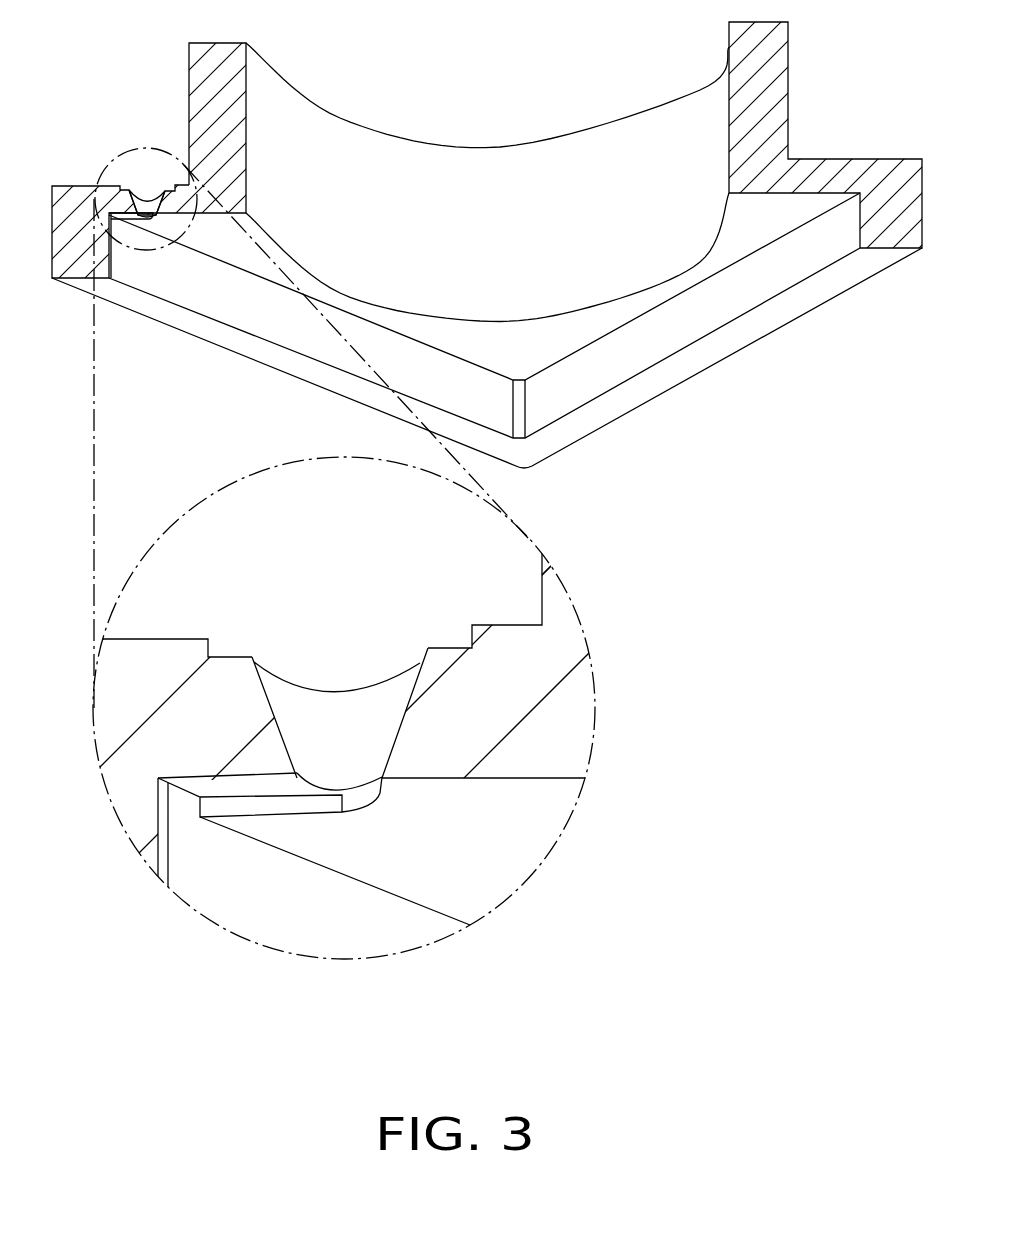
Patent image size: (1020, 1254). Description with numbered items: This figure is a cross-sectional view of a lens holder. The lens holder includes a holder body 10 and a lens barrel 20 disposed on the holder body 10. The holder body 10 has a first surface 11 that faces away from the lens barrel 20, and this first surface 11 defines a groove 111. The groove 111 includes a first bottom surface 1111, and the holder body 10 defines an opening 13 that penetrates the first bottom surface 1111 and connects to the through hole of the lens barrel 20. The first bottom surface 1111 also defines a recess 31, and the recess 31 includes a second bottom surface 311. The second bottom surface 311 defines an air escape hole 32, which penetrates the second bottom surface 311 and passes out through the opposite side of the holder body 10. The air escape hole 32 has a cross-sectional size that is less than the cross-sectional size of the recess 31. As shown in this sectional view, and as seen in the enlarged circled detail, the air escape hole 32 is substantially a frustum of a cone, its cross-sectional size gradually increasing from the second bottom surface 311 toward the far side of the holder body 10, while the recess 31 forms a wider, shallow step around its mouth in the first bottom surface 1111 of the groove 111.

The holder body 10 is at (83, 213).
The first surface 11 is at (845, 280).
The opening 13 is at (485, 180).
The lens barrel 20 is at (790, 83).
The recess 31 is at (308, 798).
The air escape hole 32 is at (347, 733).
The groove 111 is at (603, 320).
The second bottom surface 311 is at (228, 788).
The first bottom surface 1111 is at (733, 247).